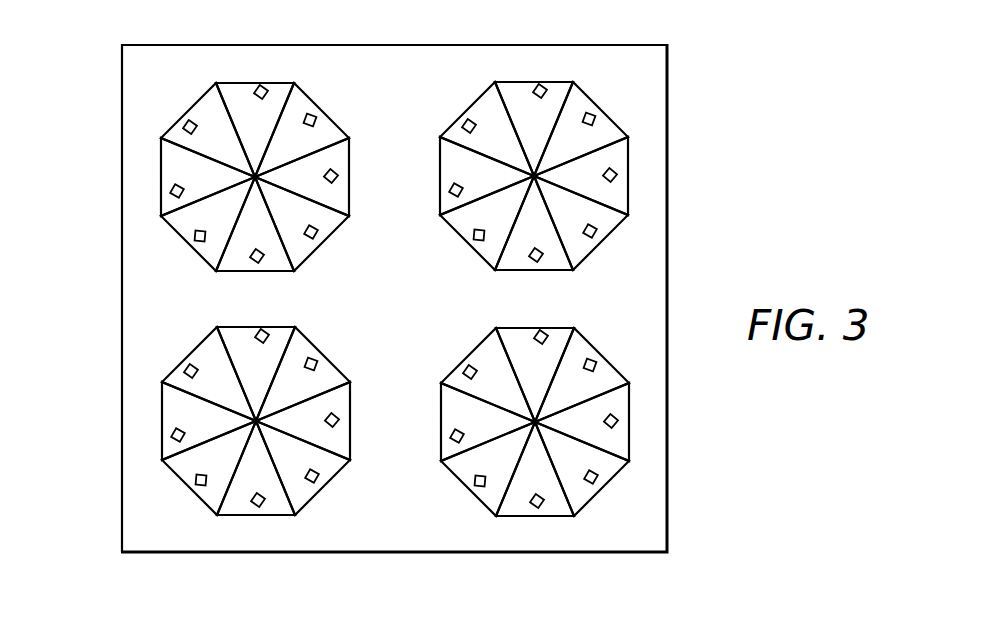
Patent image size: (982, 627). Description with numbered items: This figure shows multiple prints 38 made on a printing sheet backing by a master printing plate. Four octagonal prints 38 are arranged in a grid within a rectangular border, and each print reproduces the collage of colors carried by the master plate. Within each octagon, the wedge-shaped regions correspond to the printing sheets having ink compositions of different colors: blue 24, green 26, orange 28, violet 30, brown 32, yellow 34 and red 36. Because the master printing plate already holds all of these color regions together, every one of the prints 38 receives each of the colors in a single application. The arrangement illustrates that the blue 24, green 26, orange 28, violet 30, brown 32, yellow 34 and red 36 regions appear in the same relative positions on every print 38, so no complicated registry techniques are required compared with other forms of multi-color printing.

The blue ink composition 24 is at (205, 100).
The green ink composition 26 is at (167, 155).
The orange ink composition 28 is at (182, 225).
The violet ink composition 30 is at (237, 272).
The brown ink composition 32 is at (305, 247).
The yellow ink composition 34 is at (340, 188).
The red ink composition 36 is at (237, 93).
The prints 38 is at (633, 103).